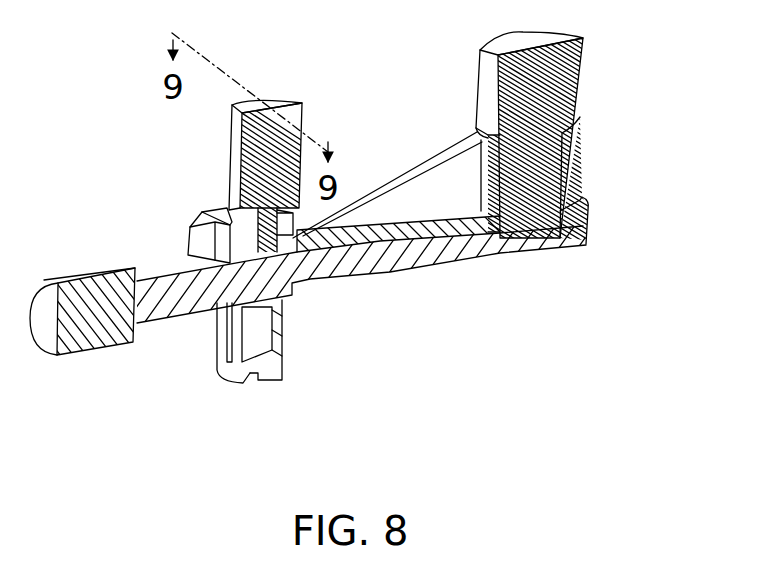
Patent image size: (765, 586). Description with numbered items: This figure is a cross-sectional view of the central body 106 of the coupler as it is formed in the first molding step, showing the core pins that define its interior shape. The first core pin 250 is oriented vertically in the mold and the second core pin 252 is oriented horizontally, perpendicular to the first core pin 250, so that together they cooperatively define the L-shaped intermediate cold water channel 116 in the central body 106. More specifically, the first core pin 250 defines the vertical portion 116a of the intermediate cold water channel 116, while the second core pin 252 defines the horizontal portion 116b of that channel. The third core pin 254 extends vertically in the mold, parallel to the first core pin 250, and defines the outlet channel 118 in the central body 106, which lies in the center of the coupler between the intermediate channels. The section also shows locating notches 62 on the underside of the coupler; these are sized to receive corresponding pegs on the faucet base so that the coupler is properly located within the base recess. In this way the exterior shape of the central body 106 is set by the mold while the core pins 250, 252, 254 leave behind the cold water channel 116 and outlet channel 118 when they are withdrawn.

The locating notches 62 is at (261, 384).
The central body 106 is at (412, 280).
The intermediate cold water channel 116 is at (356, 264).
The vertical portion 116a is at (262, 246).
The horizontal portion 116b is at (466, 250).
The outlet channel 118 is at (556, 168).
The first core pin 250 is at (238, 137).
The second core pin 252 is at (92, 336).
The third core pin 254 is at (585, 70).